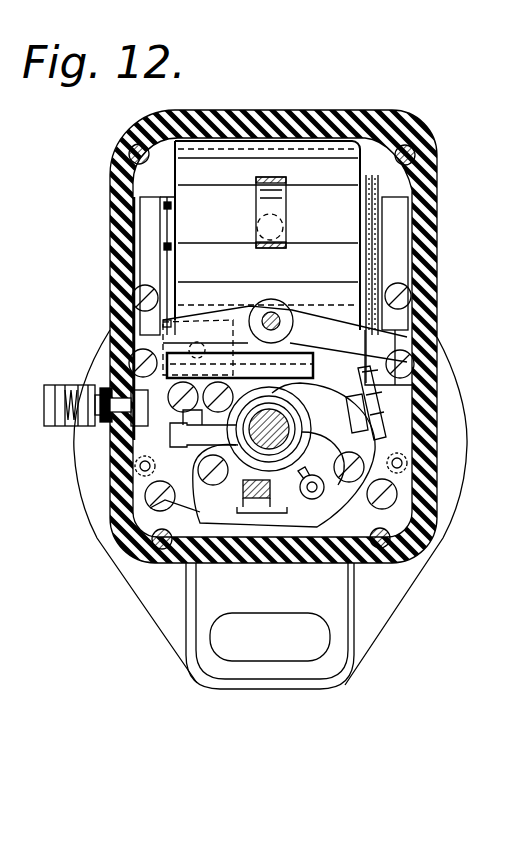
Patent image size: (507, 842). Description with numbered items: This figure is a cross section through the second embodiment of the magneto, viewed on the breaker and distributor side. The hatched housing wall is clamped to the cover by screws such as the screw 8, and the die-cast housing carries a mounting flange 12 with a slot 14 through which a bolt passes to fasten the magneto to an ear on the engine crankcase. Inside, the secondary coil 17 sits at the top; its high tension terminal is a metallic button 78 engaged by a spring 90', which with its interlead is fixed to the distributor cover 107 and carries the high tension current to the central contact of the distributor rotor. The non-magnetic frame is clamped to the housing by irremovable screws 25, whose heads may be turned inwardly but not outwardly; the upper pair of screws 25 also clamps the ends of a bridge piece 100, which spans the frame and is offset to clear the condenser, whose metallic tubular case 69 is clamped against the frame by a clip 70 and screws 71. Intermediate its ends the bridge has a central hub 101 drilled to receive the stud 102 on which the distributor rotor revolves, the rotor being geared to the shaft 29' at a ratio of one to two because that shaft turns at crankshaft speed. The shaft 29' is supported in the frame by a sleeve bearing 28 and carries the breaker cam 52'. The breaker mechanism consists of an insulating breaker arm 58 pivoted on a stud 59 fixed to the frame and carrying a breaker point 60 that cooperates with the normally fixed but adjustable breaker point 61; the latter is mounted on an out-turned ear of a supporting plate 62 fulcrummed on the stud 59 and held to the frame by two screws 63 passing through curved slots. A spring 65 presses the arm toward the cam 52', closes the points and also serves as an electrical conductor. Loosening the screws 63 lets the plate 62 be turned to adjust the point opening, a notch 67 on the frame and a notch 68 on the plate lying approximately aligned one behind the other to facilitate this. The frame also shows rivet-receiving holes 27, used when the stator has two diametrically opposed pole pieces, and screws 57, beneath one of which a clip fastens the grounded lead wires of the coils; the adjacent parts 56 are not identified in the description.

The screw 8 is at (128, 150).
The flange 12 is at (202, 625).
The slot 14 is at (270, 637).
The secondary coil 17 is at (267, 235).
The irremovable screws 25 is at (130, 362).
The rivet-receiving holes 27 is at (112, 470).
The sleeve bearing 28 is at (292, 400).
The shaft 29' is at (262, 369).
The breaker cam 52' is at (358, 408).
The plates 56 is at (152, 263).
The screws 57 is at (130, 296).
The breaker arm 58 is at (296, 508).
The stud 59 is at (312, 499).
The breaker point 60 is at (276, 500).
The breaker point 61 is at (261, 510).
The supporting plate 62 is at (232, 508).
The screws 63 is at (203, 470).
The spring 65 is at (400, 445).
The notch 67 is at (140, 528).
The notch 68 is at (190, 505).
The condenser case 69 is at (312, 296).
The clip 70 is at (178, 330).
The screws 71 is at (207, 388).
The metallic button 78 is at (285, 228).
The spring 90' is at (299, 212).
The bridge piece 100 is at (400, 335).
The central hub 101 is at (293, 304).
The stud 102 is at (266, 307).
The distributor cover 107 is at (117, 229).